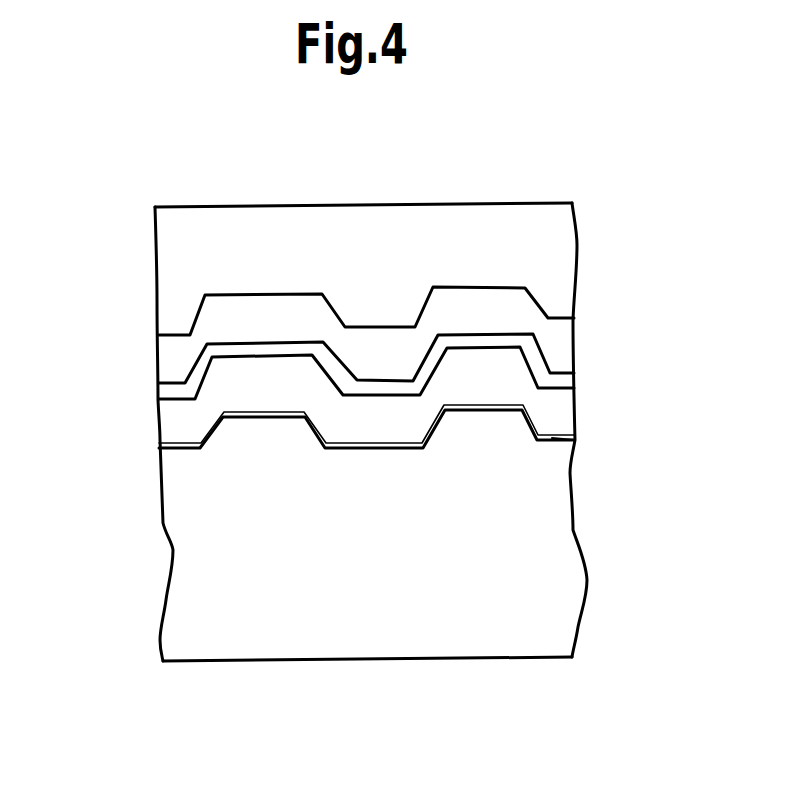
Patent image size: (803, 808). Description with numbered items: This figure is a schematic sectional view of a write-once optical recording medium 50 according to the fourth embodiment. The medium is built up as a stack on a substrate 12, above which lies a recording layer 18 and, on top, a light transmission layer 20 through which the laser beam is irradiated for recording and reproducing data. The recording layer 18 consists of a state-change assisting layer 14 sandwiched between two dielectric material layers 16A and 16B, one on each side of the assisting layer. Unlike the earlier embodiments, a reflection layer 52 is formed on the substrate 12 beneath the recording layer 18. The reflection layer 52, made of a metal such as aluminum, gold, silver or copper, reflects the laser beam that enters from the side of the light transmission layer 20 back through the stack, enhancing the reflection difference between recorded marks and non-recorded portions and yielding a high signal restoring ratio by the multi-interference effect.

The optical recording medium 50 is at (128, 242).
The light transmission layer 20 is at (560, 243).
The dielectric material layer 16A is at (548, 342).
The state-change assisting layer 14 is at (565, 382).
The dielectric material layer 16B is at (415, 425).
The recording layer 18 is at (445, 387).
The reflection layer 52 is at (575, 440).
The substrate 12 is at (553, 538).